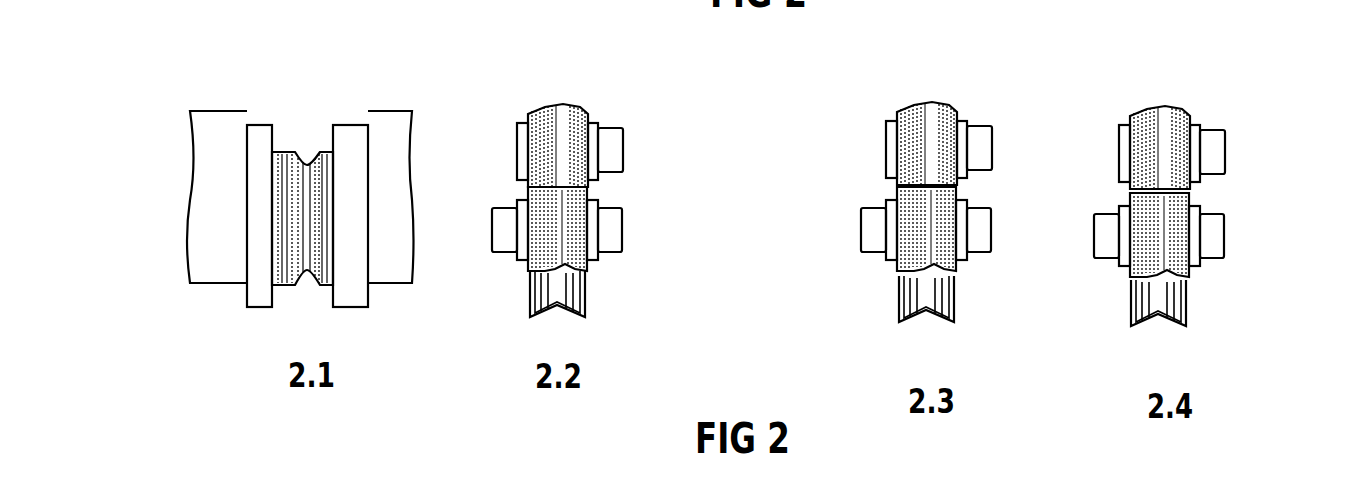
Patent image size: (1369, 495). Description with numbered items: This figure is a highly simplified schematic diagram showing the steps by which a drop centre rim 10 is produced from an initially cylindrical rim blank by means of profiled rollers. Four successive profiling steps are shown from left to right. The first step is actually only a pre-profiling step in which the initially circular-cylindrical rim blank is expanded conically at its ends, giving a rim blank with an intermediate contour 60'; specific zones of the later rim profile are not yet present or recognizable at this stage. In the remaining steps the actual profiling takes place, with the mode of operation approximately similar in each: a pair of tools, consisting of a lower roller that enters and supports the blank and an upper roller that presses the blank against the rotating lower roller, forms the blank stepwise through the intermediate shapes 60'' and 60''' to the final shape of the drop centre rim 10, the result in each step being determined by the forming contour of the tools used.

The intermediate contour 60' is at (311, 148).
The intermediate shape 60'' is at (635, 306).
The intermediate shape 60''' is at (991, 318).
The drop centre rim 10 is at (1208, 310).